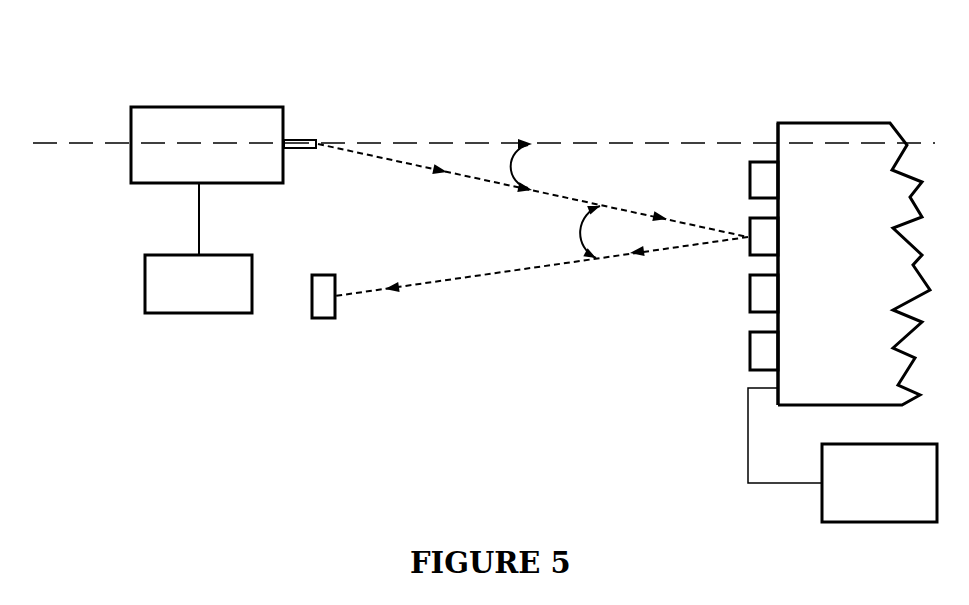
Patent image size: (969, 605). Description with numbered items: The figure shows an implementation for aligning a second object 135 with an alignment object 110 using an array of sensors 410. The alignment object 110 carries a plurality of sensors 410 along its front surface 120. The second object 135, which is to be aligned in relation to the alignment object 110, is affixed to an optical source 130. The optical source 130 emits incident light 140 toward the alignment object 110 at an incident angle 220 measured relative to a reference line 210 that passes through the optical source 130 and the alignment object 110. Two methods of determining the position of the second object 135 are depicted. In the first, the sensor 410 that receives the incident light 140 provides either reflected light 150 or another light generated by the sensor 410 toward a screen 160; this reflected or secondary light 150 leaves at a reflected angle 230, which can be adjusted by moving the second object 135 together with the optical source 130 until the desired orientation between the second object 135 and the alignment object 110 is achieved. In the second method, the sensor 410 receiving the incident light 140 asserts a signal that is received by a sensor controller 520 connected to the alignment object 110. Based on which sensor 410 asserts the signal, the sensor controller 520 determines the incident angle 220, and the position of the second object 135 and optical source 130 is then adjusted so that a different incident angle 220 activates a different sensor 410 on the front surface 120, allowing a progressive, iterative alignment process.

The alignment object 110 is at (868, 123).
The front surface 120 is at (778, 130).
The optical source 130 is at (227, 107).
The second object 135 is at (145, 276).
The incident light 140 is at (380, 157).
The reflected light 150 is at (435, 280).
The screen 160 is at (312, 302).
The reference line 210 is at (80, 143).
The incident angle 220 is at (502, 162).
The reflected angle 230 is at (583, 237).
The sensors 410 is at (750, 295).
The sensor controller 520 is at (822, 503).